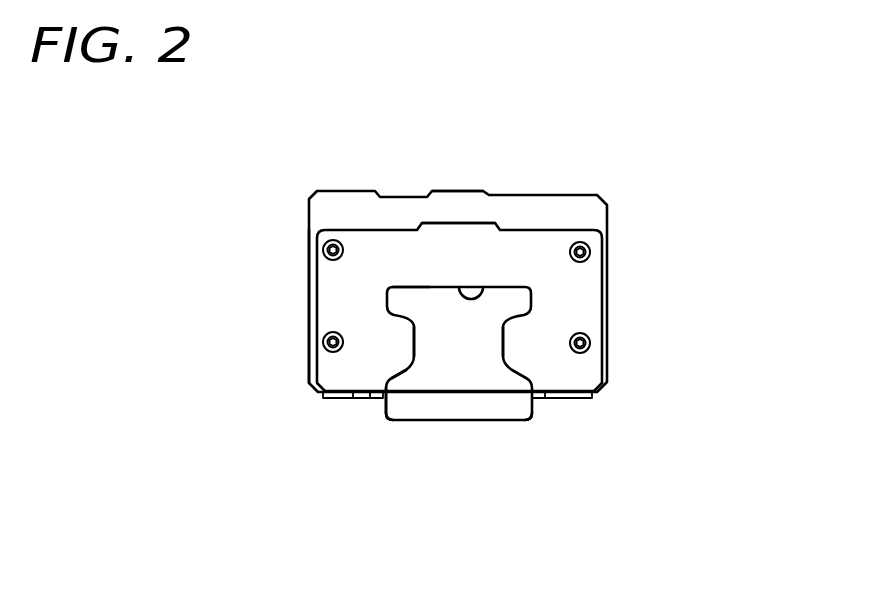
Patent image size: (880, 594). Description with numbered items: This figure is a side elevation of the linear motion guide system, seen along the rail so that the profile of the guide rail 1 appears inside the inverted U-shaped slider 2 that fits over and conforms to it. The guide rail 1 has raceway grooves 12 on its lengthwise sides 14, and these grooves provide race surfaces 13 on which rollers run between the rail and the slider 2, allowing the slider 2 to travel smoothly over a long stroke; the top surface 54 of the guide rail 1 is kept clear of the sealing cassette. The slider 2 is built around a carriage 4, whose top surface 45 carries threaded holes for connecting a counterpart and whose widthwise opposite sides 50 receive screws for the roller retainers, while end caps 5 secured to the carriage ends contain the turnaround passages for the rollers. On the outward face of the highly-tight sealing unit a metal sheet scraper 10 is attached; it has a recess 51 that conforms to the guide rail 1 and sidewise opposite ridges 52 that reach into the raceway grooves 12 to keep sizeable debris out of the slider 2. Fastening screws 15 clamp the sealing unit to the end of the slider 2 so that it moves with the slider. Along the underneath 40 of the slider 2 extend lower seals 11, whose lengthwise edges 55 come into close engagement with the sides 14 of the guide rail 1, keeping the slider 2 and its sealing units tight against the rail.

The guide rail 1 is at (468, 386).
The slider 2 is at (618, 231).
The carriage 4 is at (566, 208).
The end cap 5 is at (465, 222).
The scraper 10 is at (343, 293).
The lower seal 11 is at (573, 400).
The raceway groove 12 is at (503, 345).
The race surface 13 is at (390, 373).
The side of guide rail 14 is at (384, 405).
The fastening screw 15 is at (333, 250).
The underneath of slider 40 is at (334, 396).
The top surface of carriage 45 is at (452, 190).
The widthwise opposite side of carriage 50 is at (606, 304).
The recess of scraper 51 is at (488, 287).
The ridge of scraper 52 is at (405, 343).
The top surface of guide rail 54 is at (410, 287).
The lengthwise edge of lower seal 55 is at (362, 400).